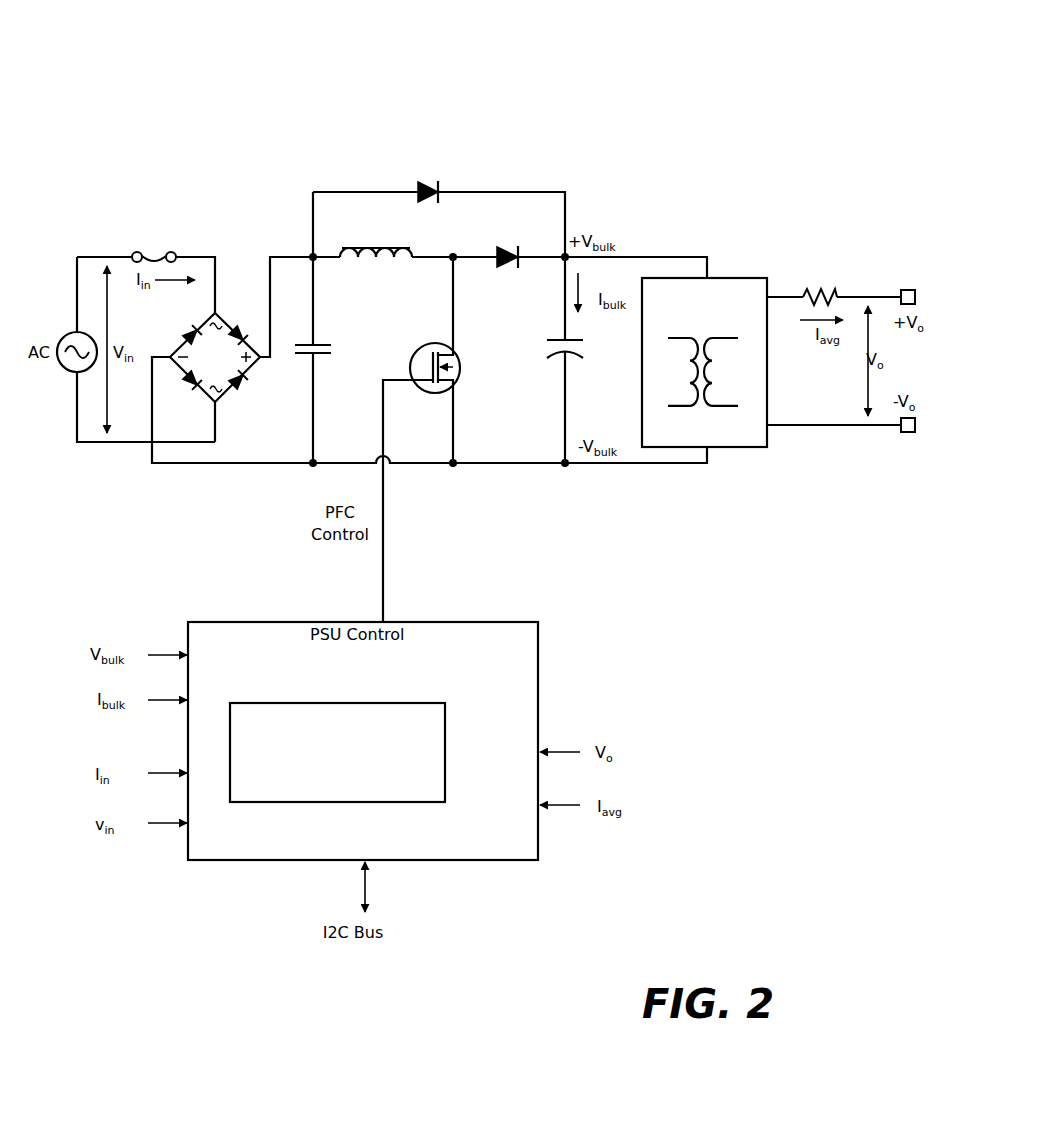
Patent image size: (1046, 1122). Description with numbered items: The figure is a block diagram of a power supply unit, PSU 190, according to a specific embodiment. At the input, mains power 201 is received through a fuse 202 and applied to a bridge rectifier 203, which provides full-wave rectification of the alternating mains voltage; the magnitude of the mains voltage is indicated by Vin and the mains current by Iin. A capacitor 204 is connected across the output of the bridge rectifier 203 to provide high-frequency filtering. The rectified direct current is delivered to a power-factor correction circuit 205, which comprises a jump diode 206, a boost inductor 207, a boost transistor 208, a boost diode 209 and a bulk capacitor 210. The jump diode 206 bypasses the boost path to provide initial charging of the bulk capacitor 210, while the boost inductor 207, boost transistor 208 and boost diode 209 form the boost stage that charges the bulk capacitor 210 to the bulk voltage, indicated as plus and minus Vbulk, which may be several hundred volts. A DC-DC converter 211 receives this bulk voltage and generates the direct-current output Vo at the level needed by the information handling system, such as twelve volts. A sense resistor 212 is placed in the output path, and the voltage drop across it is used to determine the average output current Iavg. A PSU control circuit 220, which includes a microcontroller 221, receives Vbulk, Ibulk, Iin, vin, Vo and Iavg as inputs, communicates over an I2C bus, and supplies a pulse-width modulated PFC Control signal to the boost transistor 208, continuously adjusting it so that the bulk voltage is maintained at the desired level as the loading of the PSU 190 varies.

The PSU 190 is at (721, 126).
The mains power 201 is at (63, 332).
The fuse 202 is at (147, 248).
The bridge rectifier 203 is at (228, 398).
The capacitor 204 is at (322, 344).
The power-factor correction (PFC) circuit 205 is at (446, 492).
The jump diode 206 is at (427, 185).
The boost inductor 207 is at (367, 262).
The boost transistor 208 is at (458, 375).
The boost diode 209 is at (505, 247).
The bulk capacitor 210 is at (578, 350).
The DC-DC converter 211 is at (743, 447).
The sense resistor 212 is at (825, 285).
The PSU control circuit 220 is at (363, 741).
The microcontroller 221 is at (337, 752).